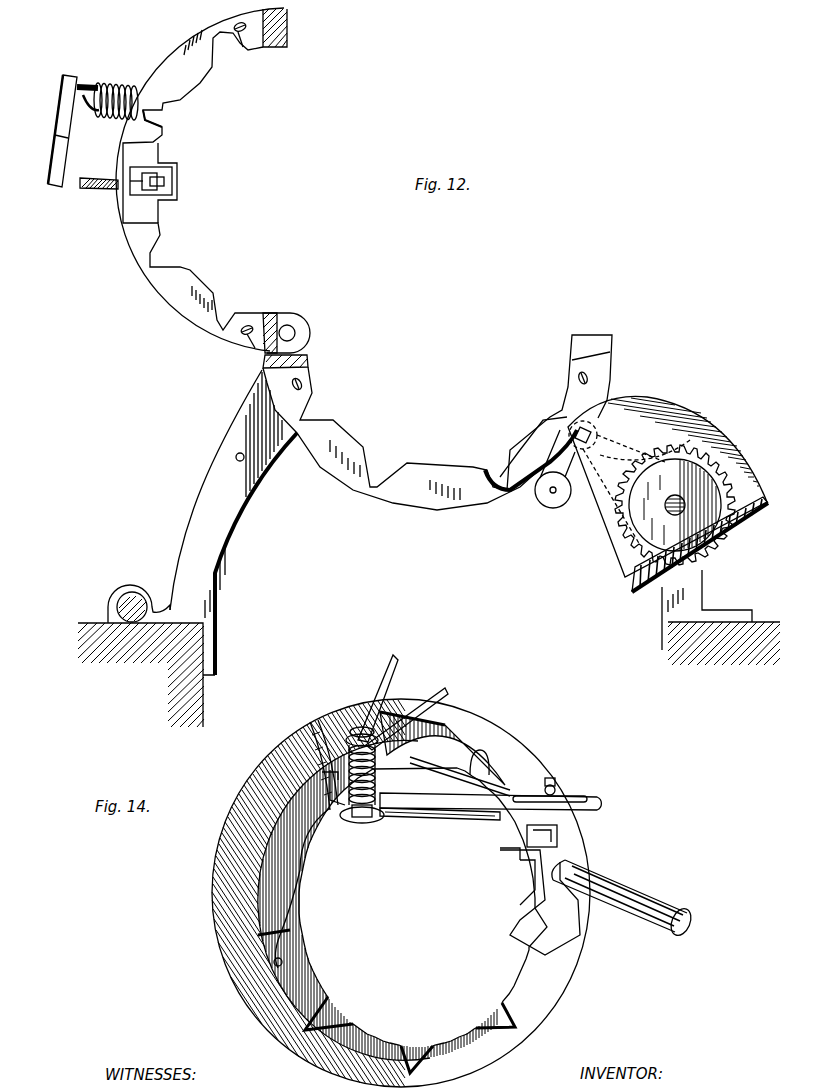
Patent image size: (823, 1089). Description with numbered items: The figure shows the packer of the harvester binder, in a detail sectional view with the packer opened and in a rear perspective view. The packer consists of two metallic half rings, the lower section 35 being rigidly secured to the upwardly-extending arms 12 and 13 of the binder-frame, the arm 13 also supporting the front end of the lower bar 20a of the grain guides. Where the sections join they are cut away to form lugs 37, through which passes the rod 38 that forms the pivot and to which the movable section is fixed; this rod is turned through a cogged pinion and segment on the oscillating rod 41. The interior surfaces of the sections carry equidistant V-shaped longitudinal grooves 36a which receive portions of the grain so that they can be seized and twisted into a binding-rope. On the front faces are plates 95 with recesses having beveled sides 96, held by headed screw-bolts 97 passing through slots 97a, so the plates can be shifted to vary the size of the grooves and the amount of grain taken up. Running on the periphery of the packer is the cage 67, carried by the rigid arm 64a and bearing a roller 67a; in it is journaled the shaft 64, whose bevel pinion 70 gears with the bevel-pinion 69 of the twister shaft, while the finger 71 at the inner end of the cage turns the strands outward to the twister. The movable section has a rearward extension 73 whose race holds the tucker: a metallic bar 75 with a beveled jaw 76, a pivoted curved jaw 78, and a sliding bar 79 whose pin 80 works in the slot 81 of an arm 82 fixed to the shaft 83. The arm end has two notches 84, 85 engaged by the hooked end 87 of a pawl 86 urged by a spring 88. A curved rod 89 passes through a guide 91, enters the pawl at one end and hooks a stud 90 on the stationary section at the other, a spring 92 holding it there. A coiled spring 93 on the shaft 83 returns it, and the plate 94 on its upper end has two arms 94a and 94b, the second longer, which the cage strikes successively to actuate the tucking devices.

In FIG. 12, the arm 12 is at (429, 648).
In FIG. 12, the arm 13 is at (226, 494).
In FIG. 12, the lower bar 20a is at (244, 459).
In FIG. 12, the lower section 35 is at (437, 431).
In FIG. 14, the lower section 35 is at (403, 913).
In FIG. 12, the V-shaped longitudinal grooves 36a is at (285, 352).
In FIG. 14, the V-shaped longitudinal grooves 36a is at (395, 994).
In FIG. 12, the lugs 37 is at (128, 255).
In FIG. 14, the lugs 37 is at (276, 812).
In FIG. 12, the rod 38 is at (293, 333).
In FIG. 14, the rod 38 is at (623, 899).
In FIG. 12, the oscillating rod 41 is at (133, 592).
In FIG. 12, the shaft 64 is at (670, 502).
In FIG. 12, the rigid arm 64a is at (700, 442).
In FIG. 12, the cage 67 is at (667, 475).
In FIG. 12, the roller 67a is at (555, 479).
In FIG. 12, the bevel-pinion 69 is at (700, 544).
In FIG. 12, the pinion 70 is at (675, 505).
In FIG. 12, the finger 71 is at (531, 453).
In FIG. 14, the extension 73 is at (485, 840).
In FIG. 14, the metallic bar 75 is at (482, 767).
In FIG. 12, the jaw 76 is at (175, 180).
In FIG. 12, the curved jaw 78 is at (147, 175).
In FIG. 14, the sliding bar 79 is at (575, 836).
In FIG. 12, the pin 80 is at (99, 175).
In FIG. 14, the pin 80 is at (552, 785).
In FIG. 14, the slot 81 is at (581, 797).
In FIG. 14, the arm 82 is at (456, 818).
In FIG. 12, the shaft 83 is at (86, 84).
In FIG. 14, the shaft 83 is at (361, 733).
In FIG. 14, the notch 84 is at (358, 824).
In FIG. 14, the notch 85 is at (318, 790).
In FIG. 14, the pawl 86 is at (325, 770).
In FIG. 14, the hooked end 87 is at (346, 822).
In FIG. 14, the spring 88 is at (318, 790).
In FIG. 14, the curved rod 89 is at (302, 870).
In FIG. 14, the stud 90 is at (284, 962).
In FIG. 14, the guide 91 is at (292, 932).
In FIG. 14, the spring 92 is at (222, 915).
In FIG. 12, the coiled spring 93 is at (118, 94).
In FIG. 14, the coiled spring 93 is at (376, 777).
In FIG. 14, the plate 94 is at (354, 733).
In FIG. 12, the arm 94a is at (58, 120).
In FIG. 14, the arm 94a is at (394, 668).
In FIG. 12, the arm 94b is at (50, 178).
In FIG. 14, the arm 94b is at (440, 692).
In FIG. 12, the plates 95 is at (335, 481).
In FIG. 12, the beveled sides 96 is at (165, 110).
In FIG. 12, the headed screw-bolts 97 is at (243, 36).
In FIG. 12, the slots 97a is at (236, 28).